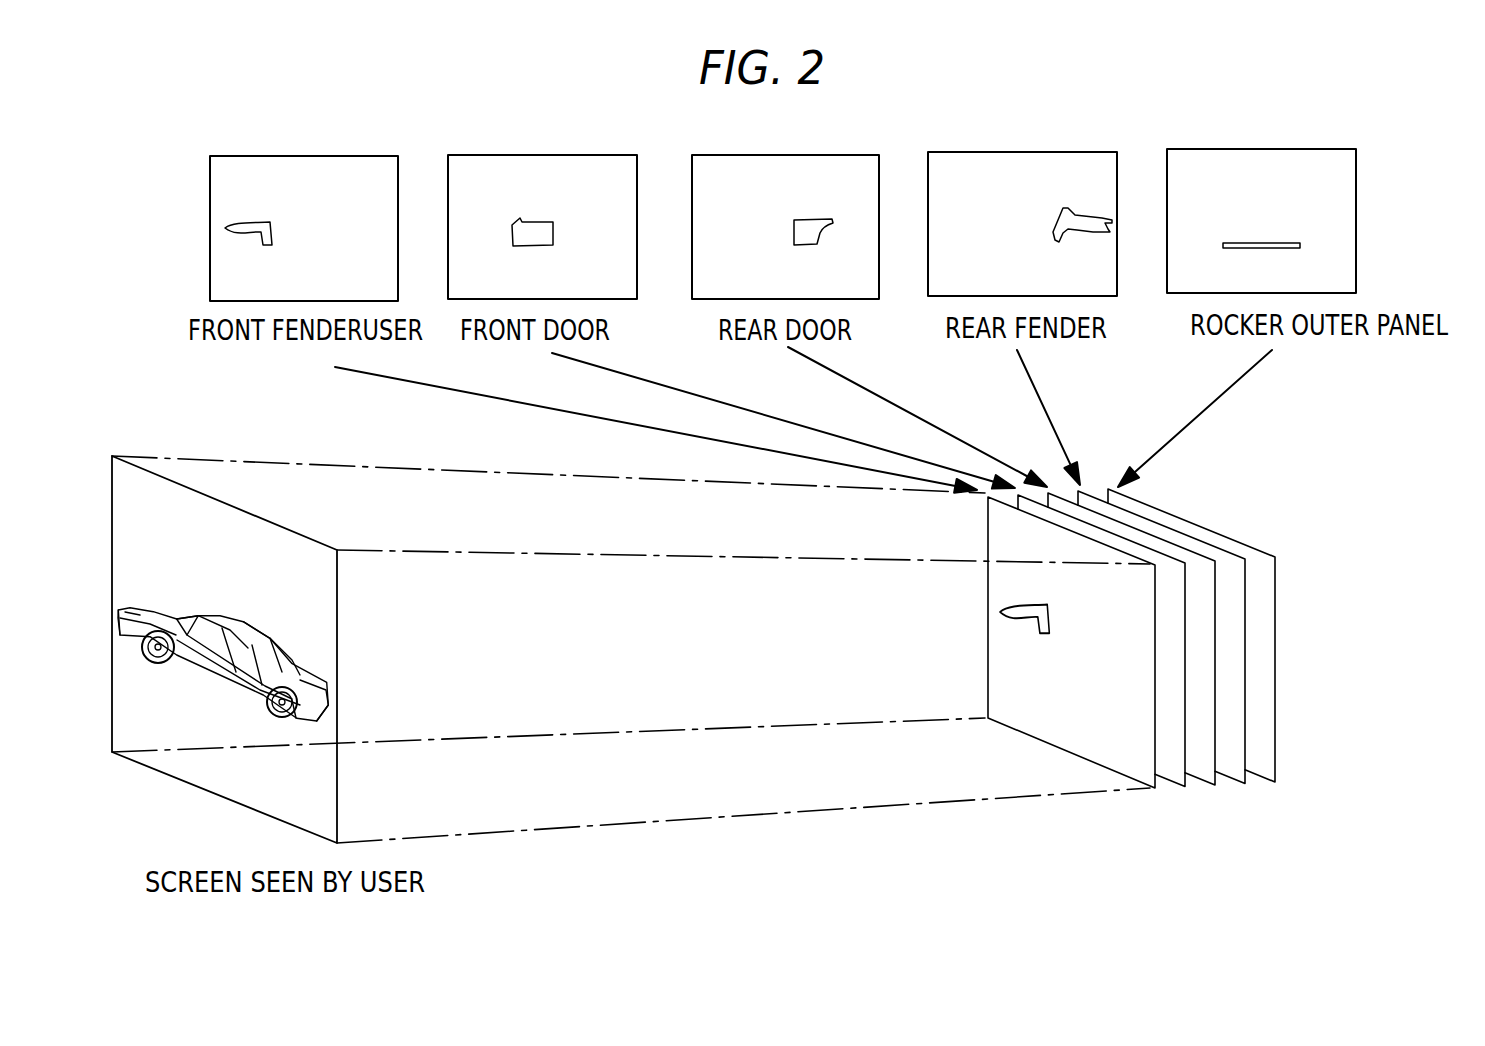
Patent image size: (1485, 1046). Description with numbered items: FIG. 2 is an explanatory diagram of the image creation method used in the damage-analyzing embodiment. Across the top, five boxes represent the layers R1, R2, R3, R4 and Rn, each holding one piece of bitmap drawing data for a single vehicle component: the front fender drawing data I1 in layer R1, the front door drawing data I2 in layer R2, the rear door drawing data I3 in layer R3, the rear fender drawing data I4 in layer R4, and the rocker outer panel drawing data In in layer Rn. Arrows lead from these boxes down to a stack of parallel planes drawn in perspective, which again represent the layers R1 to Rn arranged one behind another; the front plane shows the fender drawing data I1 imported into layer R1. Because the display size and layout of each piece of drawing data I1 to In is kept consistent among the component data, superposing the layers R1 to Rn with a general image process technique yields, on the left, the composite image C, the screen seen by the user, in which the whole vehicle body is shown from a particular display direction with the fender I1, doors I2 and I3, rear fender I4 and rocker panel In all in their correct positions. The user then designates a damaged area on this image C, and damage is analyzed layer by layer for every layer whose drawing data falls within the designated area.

The layer R1 is at (250, 284).
The layer R2 is at (486, 283).
The layer R3 is at (729, 283).
The layer R4 is at (964, 281).
The layer Rn is at (1204, 281).
The drawing data I1 is at (275, 228).
The drawing data I2 is at (556, 232).
The drawing data I3 is at (810, 219).
The drawing data I4 is at (1054, 238).
The drawing data In is at (1263, 242).
The image C is at (142, 747).